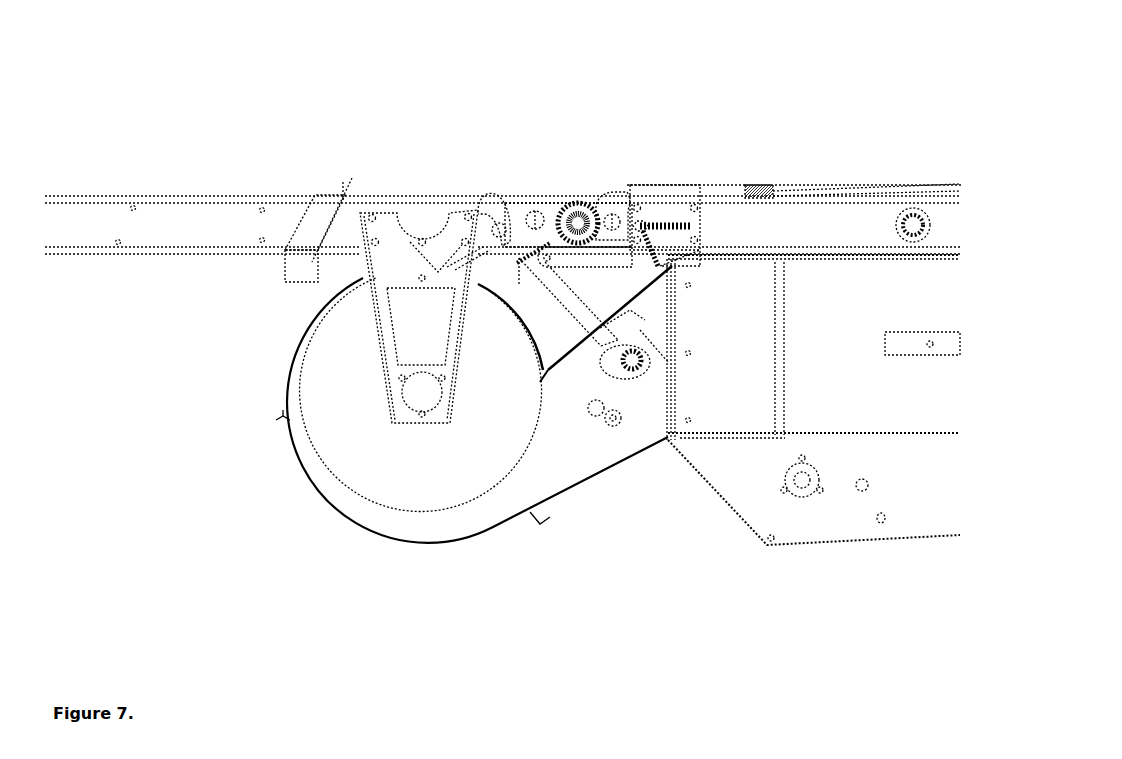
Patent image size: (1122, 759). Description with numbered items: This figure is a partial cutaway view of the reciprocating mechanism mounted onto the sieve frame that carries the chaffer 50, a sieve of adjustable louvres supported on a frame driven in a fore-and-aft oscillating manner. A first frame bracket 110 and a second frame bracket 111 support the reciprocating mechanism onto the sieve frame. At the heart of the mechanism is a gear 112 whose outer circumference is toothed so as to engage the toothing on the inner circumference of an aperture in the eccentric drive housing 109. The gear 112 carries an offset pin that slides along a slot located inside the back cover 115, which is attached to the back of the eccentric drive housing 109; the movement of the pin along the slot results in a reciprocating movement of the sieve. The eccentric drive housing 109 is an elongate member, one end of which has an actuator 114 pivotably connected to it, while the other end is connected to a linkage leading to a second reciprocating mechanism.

The chaffer 50 is at (918, 186).
The eccentric drive housing 109 is at (598, 205).
The first frame bracket 110 is at (440, 241).
The second frame bracket 111 is at (654, 211).
The gear 112 is at (581, 215).
The actuator 114 is at (576, 311).
The back cover 115 is at (555, 215).